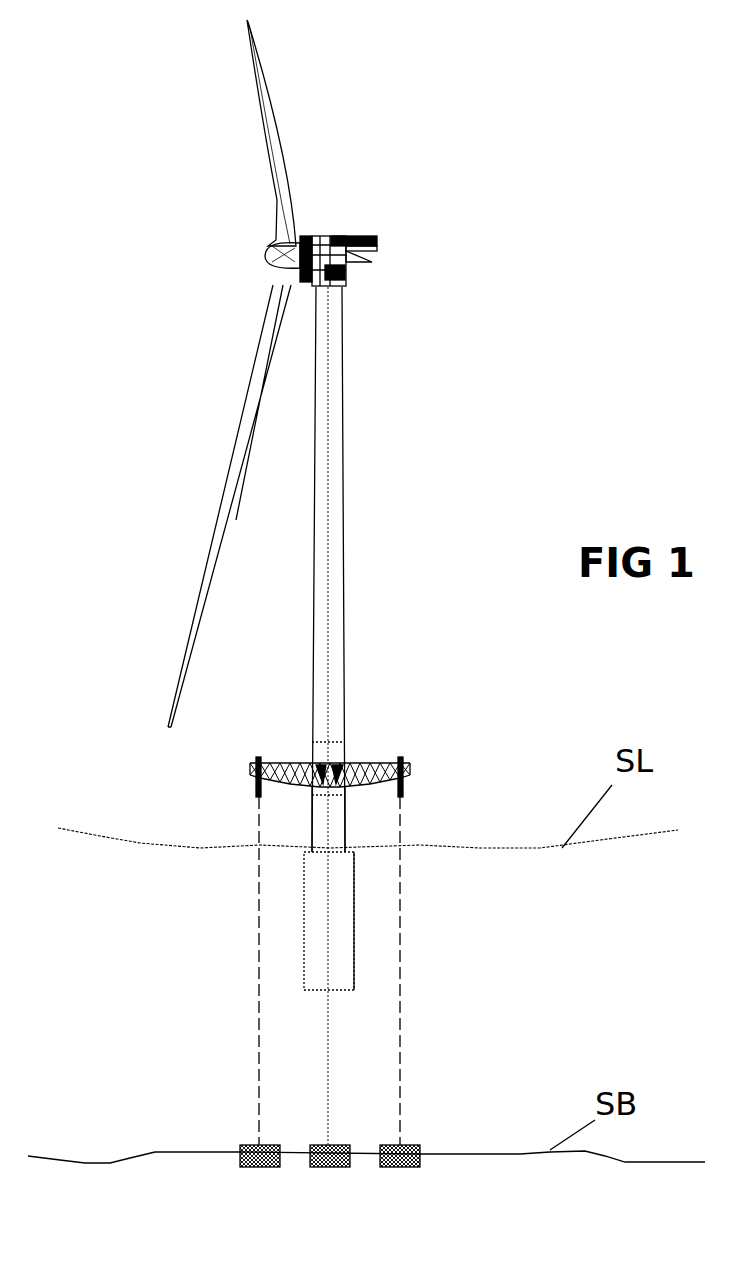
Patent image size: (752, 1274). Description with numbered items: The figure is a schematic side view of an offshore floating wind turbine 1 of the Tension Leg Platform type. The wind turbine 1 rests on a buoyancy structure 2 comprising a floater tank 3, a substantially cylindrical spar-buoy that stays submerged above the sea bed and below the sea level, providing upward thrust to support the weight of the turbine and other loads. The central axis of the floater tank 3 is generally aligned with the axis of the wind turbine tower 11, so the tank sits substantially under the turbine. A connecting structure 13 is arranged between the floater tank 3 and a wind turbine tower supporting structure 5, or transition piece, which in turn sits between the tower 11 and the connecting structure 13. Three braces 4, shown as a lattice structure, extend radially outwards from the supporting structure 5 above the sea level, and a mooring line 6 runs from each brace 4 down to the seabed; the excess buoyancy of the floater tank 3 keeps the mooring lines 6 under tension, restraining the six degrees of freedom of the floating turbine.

The wind turbine 1 is at (398, 417).
The wind turbine tower 11 is at (360, 570).
The braces 4 is at (284, 762).
The wind turbine tower supporting structure 5 is at (318, 788).
The connecting structure 13 is at (342, 818).
The buoyancy structure 2 is at (265, 915).
The floater tank 3 is at (343, 938).
The mooring lines 6 is at (258, 940).